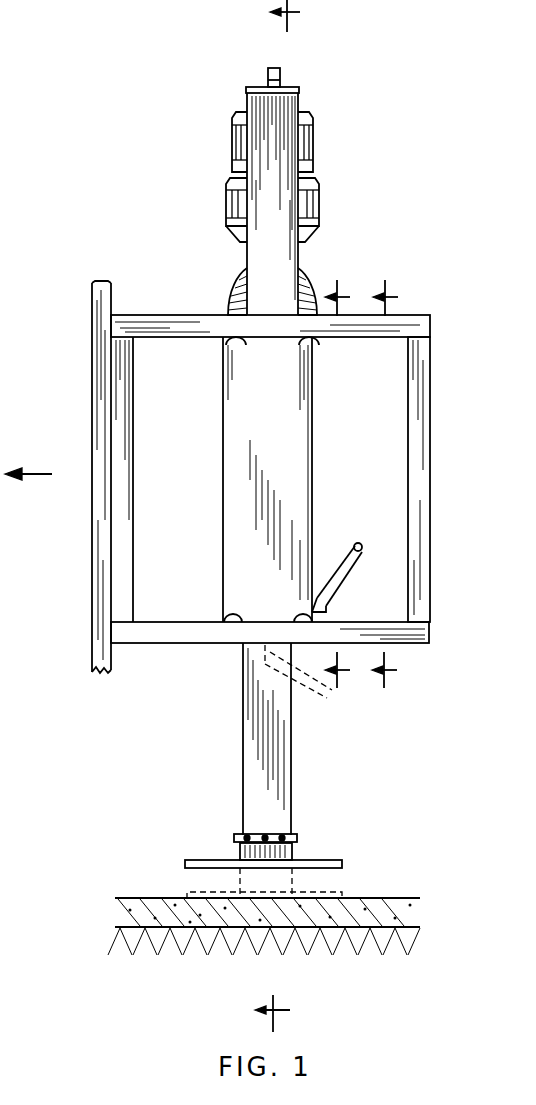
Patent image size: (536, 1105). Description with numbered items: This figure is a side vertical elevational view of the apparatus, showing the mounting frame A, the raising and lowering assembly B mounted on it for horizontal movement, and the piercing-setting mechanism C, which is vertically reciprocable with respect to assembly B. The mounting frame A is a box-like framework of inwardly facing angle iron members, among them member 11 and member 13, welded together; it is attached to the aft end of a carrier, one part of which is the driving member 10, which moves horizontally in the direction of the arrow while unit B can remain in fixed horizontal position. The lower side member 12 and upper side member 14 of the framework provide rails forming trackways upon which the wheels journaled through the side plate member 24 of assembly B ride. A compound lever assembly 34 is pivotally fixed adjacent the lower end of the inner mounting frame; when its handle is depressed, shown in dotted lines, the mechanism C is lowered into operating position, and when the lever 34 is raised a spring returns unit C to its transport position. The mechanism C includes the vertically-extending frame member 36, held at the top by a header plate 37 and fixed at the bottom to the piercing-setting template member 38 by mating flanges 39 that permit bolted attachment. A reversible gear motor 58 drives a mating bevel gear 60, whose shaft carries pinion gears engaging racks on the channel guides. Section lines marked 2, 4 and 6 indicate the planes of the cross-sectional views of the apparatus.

The driving member 10 is at (92, 538).
The angle iron member 11 is at (431, 489).
The lower side member 12 is at (429, 644).
The angle iron member 13 is at (133, 571).
The upper side member 14 is at (431, 327).
The side plate member 24 is at (295, 403).
The compound lever assembly 34 is at (333, 603).
The frame member 36 is at (290, 253).
The header plate 37 is at (282, 85).
The piercing-setting template member 38 is at (305, 859).
The mating flanges 39 is at (294, 834).
The reversible gear motor 58 is at (315, 140).
The mating bevel gear 60 is at (231, 291).
The section line 2 is at (393, 484).
The section line 4 is at (345, 484).
The section line 6 is at (287, 516).
The mounting frame A is at (429, 447).
The raising and lowering assembly B is at (314, 447).
The piercing-setting mechanism C is at (292, 735).